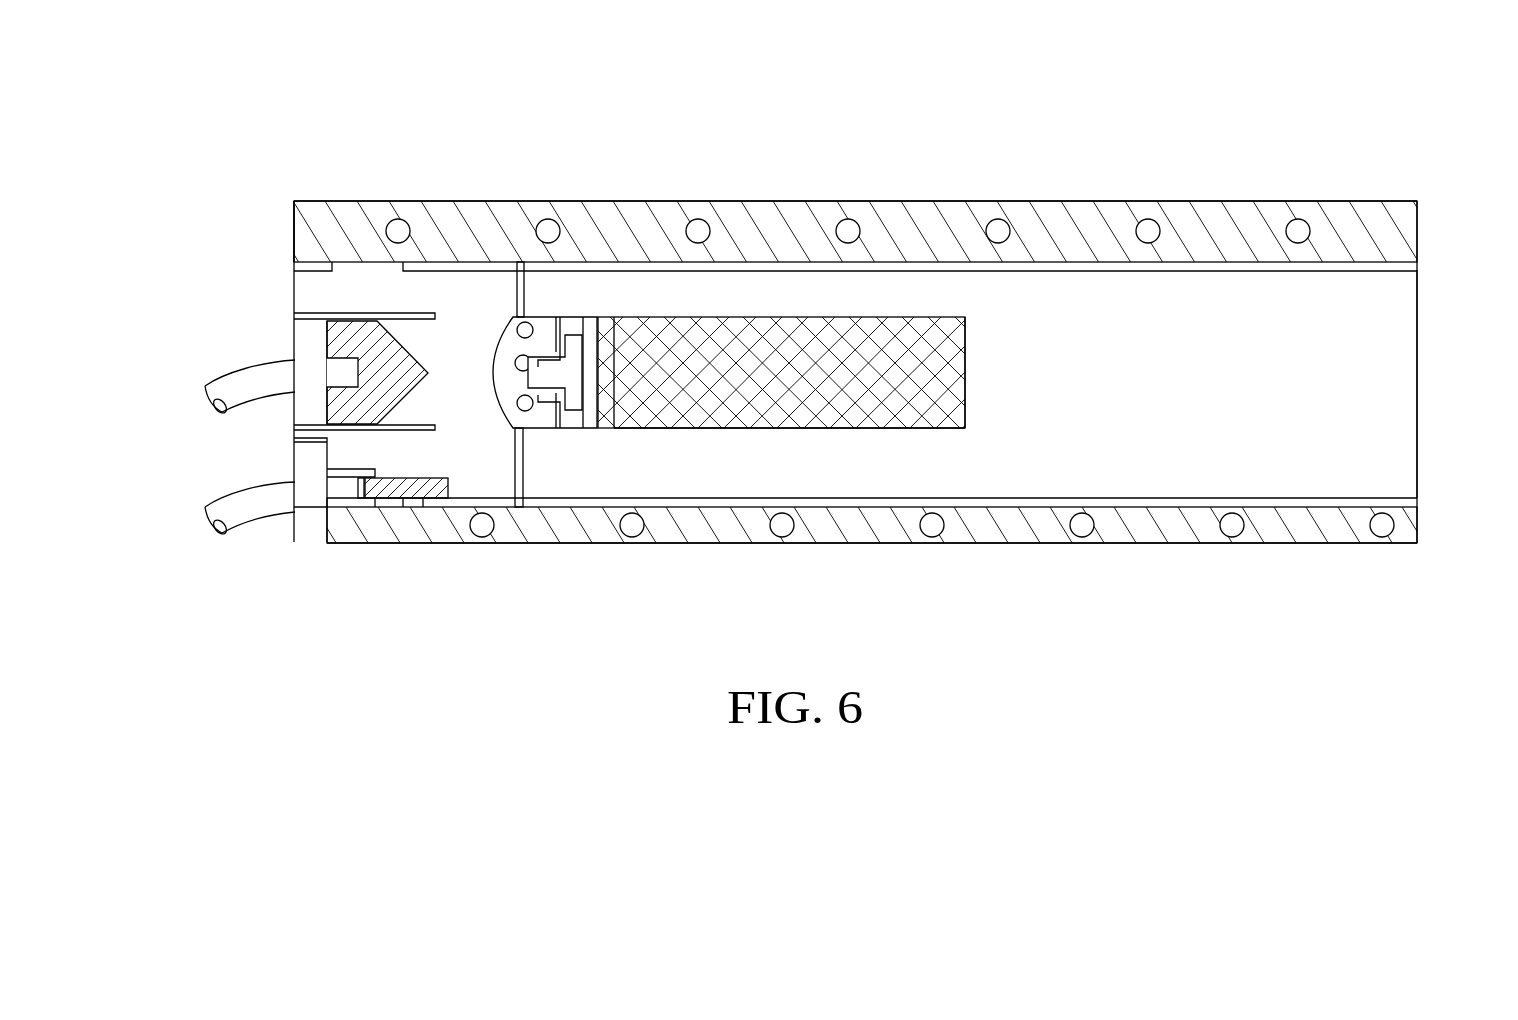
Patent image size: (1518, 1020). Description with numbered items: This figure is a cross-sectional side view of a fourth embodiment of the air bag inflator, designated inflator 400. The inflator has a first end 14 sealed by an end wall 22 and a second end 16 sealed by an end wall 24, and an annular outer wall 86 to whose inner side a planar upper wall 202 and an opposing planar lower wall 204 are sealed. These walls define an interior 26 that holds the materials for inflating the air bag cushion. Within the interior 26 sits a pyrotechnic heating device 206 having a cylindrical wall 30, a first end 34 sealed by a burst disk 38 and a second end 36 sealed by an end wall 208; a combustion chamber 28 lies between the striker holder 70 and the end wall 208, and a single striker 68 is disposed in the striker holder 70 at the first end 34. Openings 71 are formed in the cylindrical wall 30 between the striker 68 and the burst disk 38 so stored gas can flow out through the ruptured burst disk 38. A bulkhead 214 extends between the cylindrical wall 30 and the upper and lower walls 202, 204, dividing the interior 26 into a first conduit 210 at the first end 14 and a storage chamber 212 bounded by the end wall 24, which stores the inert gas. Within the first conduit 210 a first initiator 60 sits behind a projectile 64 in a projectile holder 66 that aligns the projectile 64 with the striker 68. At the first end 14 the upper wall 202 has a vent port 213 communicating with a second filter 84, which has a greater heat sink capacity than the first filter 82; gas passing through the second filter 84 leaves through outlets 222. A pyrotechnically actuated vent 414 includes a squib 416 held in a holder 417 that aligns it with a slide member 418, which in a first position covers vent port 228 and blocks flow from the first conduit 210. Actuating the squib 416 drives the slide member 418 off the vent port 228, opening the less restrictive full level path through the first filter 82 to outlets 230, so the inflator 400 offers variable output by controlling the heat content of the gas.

The first end 14 is at (295, 201).
The second end 16 is at (1418, 202).
The end wall 22 is at (294, 292).
The end wall 24 is at (1418, 390).
The interior 26 is at (1118, 478).
The combustion chamber 28 is at (737, 418).
The cylindrical wall 30 is at (868, 428).
The first end 34 is at (530, 318).
The second end 36 is at (965, 318).
The burst disk 38 is at (500, 400).
The first initiator 60 is at (303, 375).
The projectile 64 is at (362, 347).
The projectile holder 66 is at (387, 430).
The striker 68 is at (566, 378).
The striker holder 70 is at (573, 325).
The openings 71 is at (520, 326).
The first filter 82 is at (462, 530).
The second filter 84 is at (775, 223).
The annular outer wall 86 is at (1180, 202).
The upper wall 202 is at (905, 268).
The lower wall 204 is at (1165, 507).
The pyrotechnic heating device 206 is at (659, 445).
The end wall 208 is at (966, 373).
The first conduit 210 is at (450, 464).
The storage chamber 212 is at (1302, 457).
The vent port 213 is at (403, 268).
The bulkhead 214 is at (522, 468).
The outlets 222 is at (541, 237).
The vent port 228 is at (407, 502).
The outlets 230 is at (482, 537).
The inflator 400 is at (762, 95).
The pyrotechnically actuated vent 414 is at (270, 543).
The squib 416 is at (307, 525).
The holder 417 is at (345, 503).
The slide member 418 is at (392, 490).